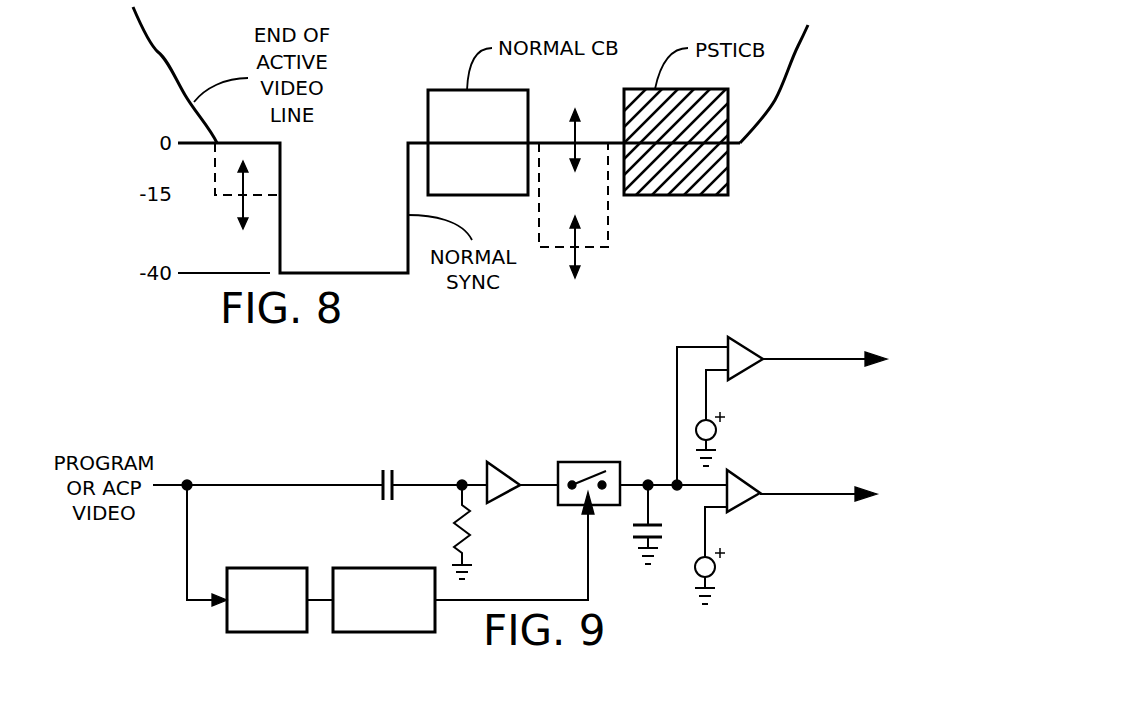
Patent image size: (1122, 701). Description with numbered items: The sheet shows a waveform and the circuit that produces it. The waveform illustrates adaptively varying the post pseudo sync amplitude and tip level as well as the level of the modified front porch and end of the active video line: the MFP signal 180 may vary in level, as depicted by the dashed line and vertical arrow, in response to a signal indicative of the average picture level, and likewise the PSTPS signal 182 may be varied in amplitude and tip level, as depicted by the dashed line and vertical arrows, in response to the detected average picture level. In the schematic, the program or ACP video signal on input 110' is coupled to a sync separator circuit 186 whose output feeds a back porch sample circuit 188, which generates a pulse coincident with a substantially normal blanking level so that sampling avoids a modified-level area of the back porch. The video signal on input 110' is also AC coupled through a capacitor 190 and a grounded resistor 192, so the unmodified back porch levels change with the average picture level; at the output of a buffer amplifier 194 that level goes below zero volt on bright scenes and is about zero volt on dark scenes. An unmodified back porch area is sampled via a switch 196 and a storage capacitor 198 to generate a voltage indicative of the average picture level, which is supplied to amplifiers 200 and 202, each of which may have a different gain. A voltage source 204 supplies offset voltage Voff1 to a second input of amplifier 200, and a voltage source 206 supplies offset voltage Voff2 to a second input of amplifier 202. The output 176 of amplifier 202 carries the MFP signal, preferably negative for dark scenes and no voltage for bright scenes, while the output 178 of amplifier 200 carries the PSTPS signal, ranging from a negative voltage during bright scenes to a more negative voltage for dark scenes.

In FIG. 8, the MFP signal 180 is at (215, 200).
In FIG. 8, the PSTPS signal 182 is at (607, 222).
In FIG. 9, the input 110' is at (268, 465).
In FIG. 9, the sync separator circuit 186 is at (267, 568).
In FIG. 9, the back porch sample circuit 188 is at (378, 568).
In FIG. 9, the capacitor 190 is at (395, 470).
In FIG. 9, the grounded resistor 192 is at (469, 541).
In FIG. 9, the buffer amplifier 194 is at (505, 462).
In FIG. 9, the switch 196 is at (593, 462).
In FIG. 9, the storage capacitor 198 is at (662, 539).
In FIG. 9, the amplifier 200 is at (735, 333).
In FIG. 9, the amplifier 202 is at (735, 470).
In FIG. 9, the voltage source 204 is at (717, 428).
In FIG. 9, the voltage source 206 is at (716, 566).
In FIG. 9, the output 178 is at (803, 359).
In FIG. 9, the output 176 is at (803, 494).